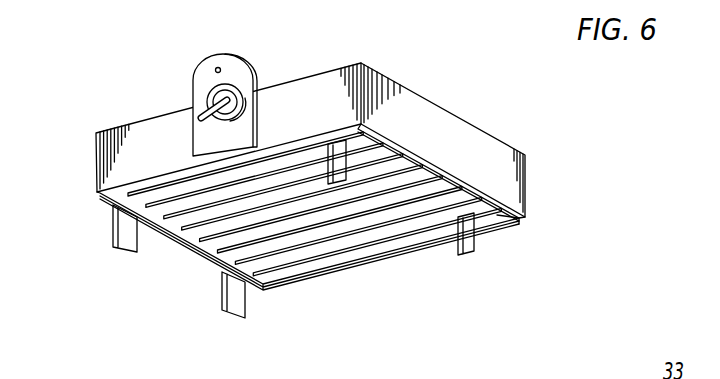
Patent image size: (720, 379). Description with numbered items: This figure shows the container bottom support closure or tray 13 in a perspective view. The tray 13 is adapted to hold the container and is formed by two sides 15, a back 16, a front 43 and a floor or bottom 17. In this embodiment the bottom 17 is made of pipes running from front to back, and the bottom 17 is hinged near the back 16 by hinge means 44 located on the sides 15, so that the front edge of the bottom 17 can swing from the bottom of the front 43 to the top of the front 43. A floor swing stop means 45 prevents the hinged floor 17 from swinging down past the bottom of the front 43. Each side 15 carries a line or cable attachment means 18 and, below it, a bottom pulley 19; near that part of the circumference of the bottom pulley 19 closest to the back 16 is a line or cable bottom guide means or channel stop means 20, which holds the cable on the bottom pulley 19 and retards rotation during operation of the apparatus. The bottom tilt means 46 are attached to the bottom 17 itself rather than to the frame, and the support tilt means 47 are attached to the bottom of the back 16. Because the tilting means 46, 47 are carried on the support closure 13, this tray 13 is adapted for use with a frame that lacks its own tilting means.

The container bottom support closure or tray 13 is at (456, 80).
The side 15 is at (341, 80).
The back 16 is at (95, 161).
The floor or bottom 17 is at (412, 213).
The line or cable attachment means 18 is at (219, 68).
The bottom pulley 19 is at (215, 100).
The line or cable bottom guide means or channel stop means 20 is at (205, 112).
The front 43 is at (482, 148).
The hinge means 44 is at (110, 201).
The floor swing stop means 45 is at (517, 220).
The bottom tilt means 46 is at (475, 249).
The support tilt means 47 is at (232, 293).